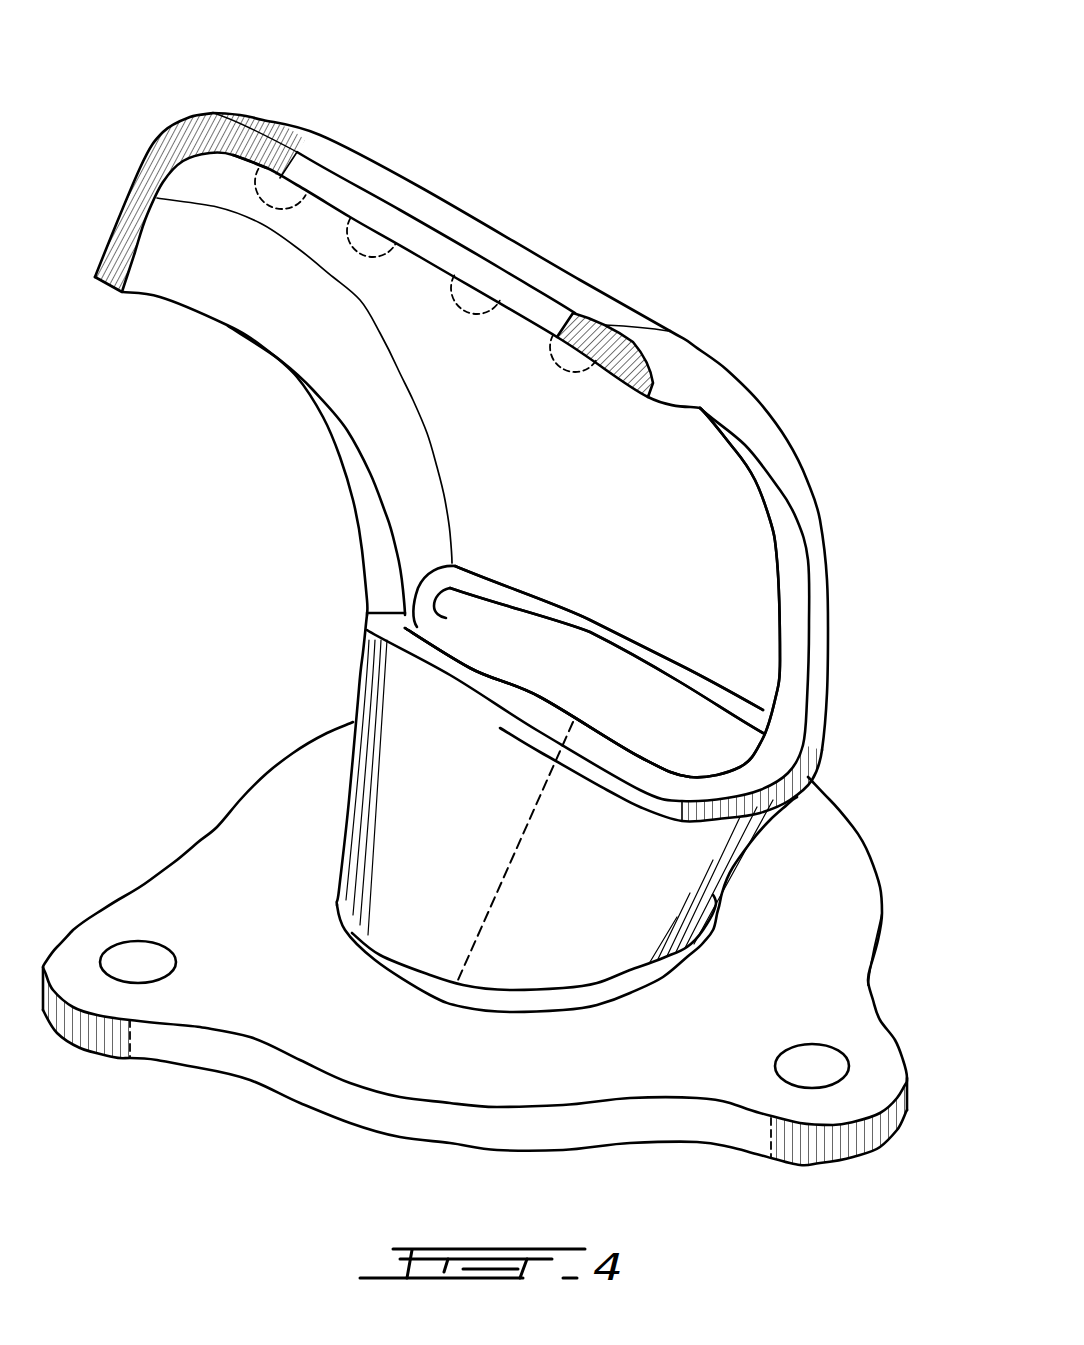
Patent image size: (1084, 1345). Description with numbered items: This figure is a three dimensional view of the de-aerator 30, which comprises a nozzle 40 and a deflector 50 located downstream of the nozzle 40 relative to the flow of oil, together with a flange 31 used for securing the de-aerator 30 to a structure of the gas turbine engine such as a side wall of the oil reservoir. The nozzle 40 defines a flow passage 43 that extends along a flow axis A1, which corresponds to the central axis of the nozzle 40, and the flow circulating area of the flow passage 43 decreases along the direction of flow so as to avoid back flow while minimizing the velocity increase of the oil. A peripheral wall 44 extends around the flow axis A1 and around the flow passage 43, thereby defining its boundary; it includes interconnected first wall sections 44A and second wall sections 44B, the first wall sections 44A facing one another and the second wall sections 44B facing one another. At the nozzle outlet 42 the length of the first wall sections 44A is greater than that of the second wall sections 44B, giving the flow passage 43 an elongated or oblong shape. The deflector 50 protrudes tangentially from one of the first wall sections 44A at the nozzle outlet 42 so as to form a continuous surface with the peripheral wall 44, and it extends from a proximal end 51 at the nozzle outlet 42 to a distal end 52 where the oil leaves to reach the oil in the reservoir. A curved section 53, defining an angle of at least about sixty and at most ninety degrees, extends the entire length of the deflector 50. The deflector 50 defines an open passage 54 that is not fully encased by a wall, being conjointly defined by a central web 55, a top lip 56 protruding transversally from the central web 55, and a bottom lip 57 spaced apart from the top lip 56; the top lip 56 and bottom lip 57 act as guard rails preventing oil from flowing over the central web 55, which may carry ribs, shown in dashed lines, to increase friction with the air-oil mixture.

The de-aerator 30 is at (763, 157).
The flange 31 is at (802, 936).
The nozzle 40 is at (280, 697).
The nozzle outlet 42 is at (696, 677).
The flow passage 43 is at (521, 652).
The peripheral wall 44 is at (397, 778).
The first wall sections 44A is at (620, 630).
The second wall sections 44B is at (417, 628).
The deflector 50 is at (812, 337).
The proximal end 51 is at (696, 677).
The distal end 52 is at (369, 181).
The curved section 53 is at (814, 498).
The open passage 54 is at (507, 410).
The central web 55 is at (428, 248).
The top lip 56 is at (137, 217).
The bottom lip 57 is at (792, 680).
The flow axis A1 is at (507, 865).